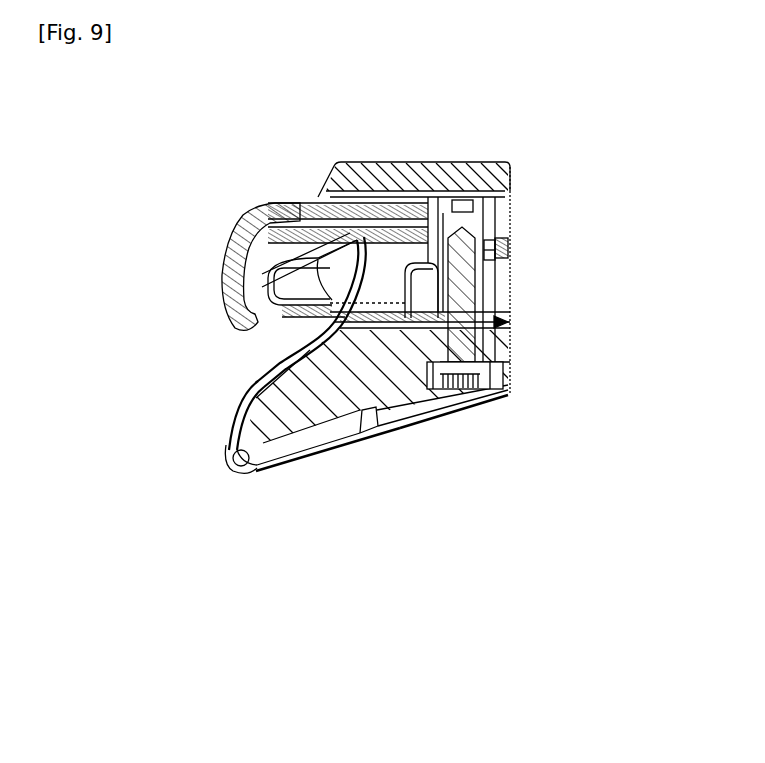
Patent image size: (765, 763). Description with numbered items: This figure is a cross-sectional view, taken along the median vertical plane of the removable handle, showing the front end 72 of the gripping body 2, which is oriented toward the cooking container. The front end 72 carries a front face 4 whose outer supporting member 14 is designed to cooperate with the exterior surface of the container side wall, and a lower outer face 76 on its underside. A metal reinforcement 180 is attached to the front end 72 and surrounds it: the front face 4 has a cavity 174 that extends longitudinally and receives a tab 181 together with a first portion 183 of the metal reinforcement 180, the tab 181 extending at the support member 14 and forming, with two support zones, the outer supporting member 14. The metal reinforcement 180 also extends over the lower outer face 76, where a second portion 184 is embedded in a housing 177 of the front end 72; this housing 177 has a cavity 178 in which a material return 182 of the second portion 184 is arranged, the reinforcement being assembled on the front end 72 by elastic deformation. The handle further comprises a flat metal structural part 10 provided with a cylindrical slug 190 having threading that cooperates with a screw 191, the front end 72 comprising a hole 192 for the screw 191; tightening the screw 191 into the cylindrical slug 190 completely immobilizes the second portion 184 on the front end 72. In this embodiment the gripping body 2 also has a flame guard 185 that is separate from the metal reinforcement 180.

The gripping body 2 is at (470, 349).
The front face 4 is at (258, 380).
The structural part 10 is at (318, 194).
The outer supporting member 14 is at (226, 457).
The front end 72 is at (283, 430).
The lower outer face 76 is at (418, 370).
The cavity 174 is at (278, 363).
The housing 177 is at (344, 442).
The cavity 178 is at (470, 399).
The metal reinforcement 180 is at (297, 432).
The tab 181 is at (227, 477).
The material return 182 is at (368, 440).
The first portion 183 is at (256, 220).
The second portion 184 is at (318, 452).
The flame guard 185 is at (378, 440).
The cylindrical slug 190 is at (492, 220).
The screw 191 is at (462, 296).
The hole 192 is at (478, 343).